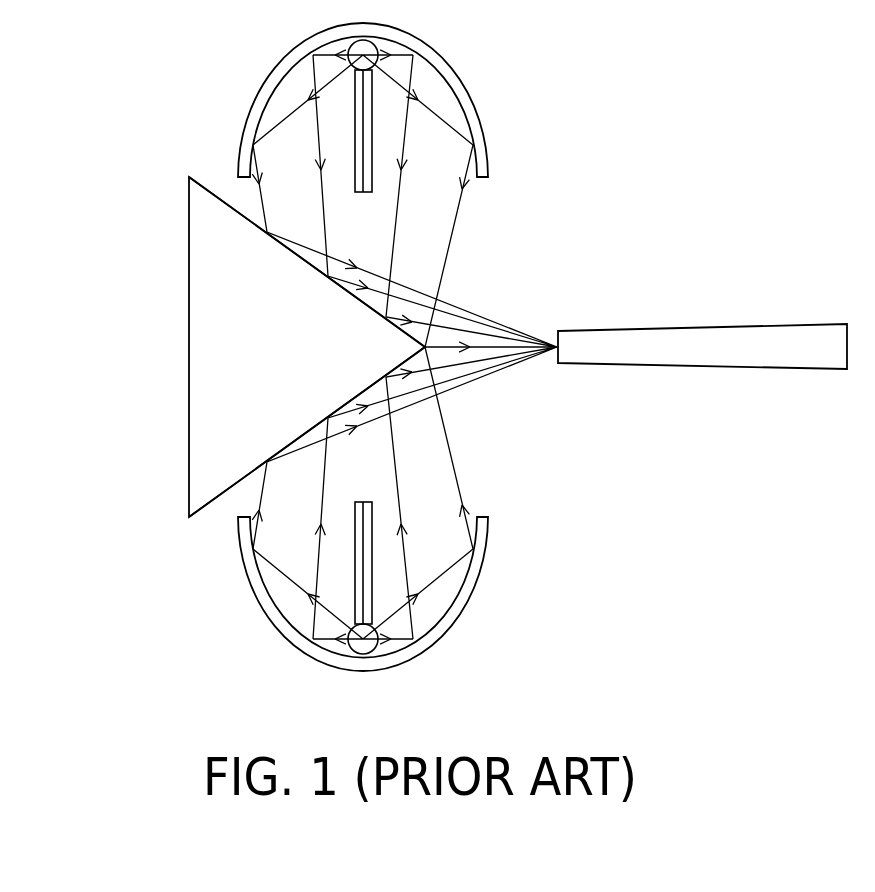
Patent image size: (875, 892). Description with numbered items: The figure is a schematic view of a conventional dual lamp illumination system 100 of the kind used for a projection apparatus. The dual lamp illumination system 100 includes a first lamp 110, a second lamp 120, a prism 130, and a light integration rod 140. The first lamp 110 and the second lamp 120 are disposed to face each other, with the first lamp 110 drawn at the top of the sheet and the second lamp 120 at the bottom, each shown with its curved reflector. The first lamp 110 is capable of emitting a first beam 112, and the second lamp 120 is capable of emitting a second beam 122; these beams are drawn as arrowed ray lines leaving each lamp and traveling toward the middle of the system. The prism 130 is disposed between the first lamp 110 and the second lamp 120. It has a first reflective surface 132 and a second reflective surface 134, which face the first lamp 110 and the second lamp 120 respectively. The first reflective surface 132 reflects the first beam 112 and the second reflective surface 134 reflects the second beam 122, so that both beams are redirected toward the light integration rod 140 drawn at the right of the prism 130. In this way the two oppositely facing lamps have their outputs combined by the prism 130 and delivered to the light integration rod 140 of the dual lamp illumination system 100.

The dual lamp illumination system 100 is at (795, 632).
The first lamp 110 is at (462, 90).
The first beam 112 is at (458, 220).
The second lamp 120 is at (477, 592).
The second beam 122 is at (450, 440).
The prism 130 is at (205, 261).
The first reflective surface 132 is at (228, 207).
The second reflective surface 134 is at (220, 498).
The light integration rod 140 is at (703, 327).